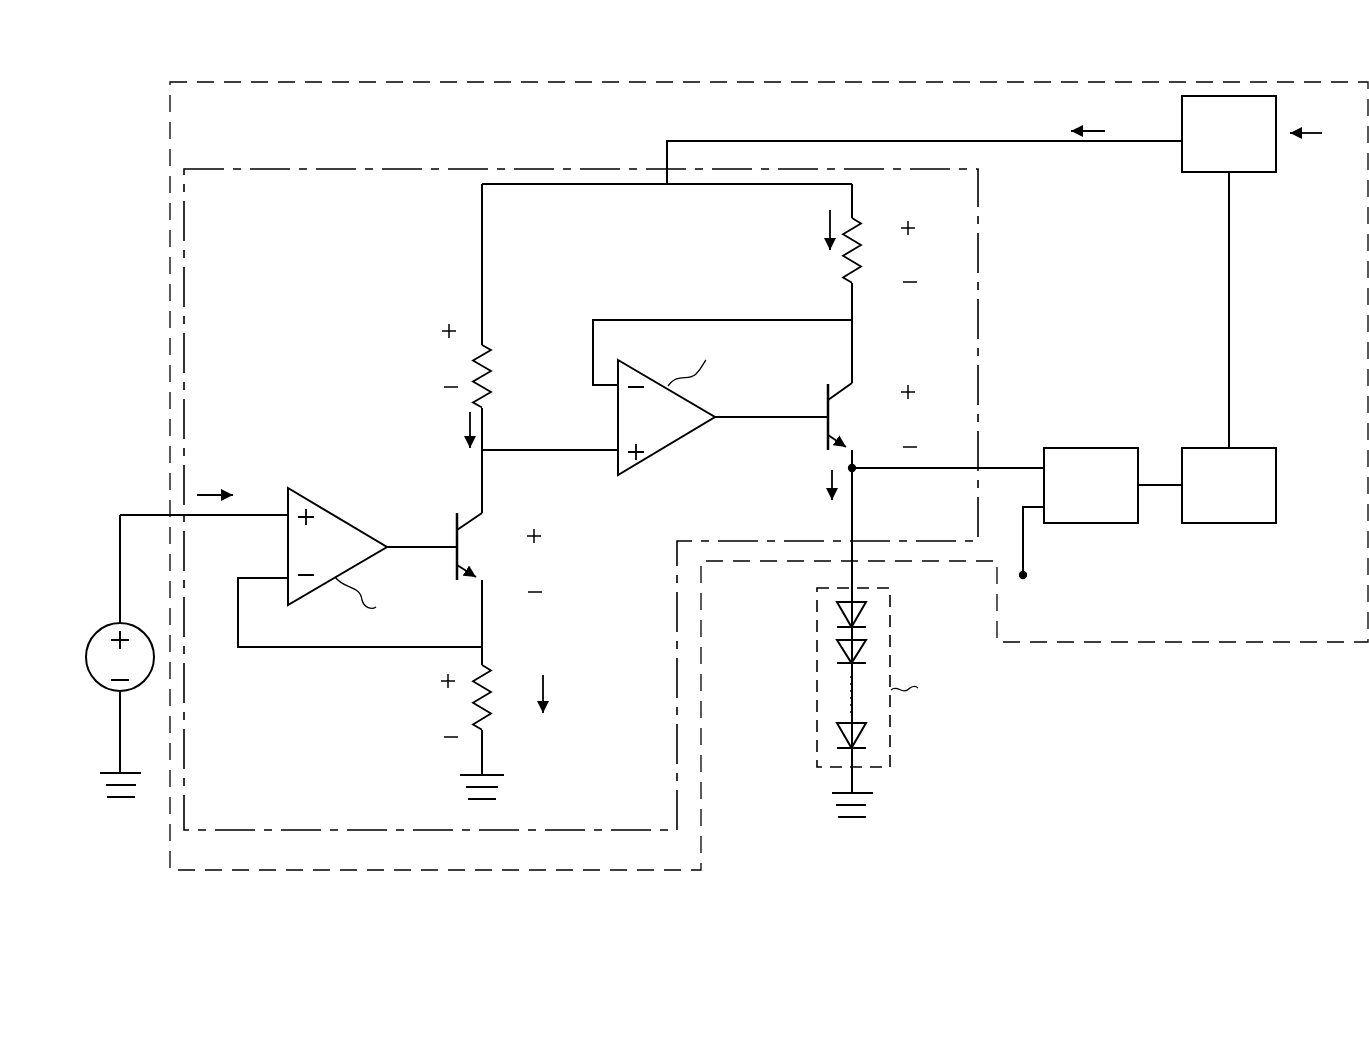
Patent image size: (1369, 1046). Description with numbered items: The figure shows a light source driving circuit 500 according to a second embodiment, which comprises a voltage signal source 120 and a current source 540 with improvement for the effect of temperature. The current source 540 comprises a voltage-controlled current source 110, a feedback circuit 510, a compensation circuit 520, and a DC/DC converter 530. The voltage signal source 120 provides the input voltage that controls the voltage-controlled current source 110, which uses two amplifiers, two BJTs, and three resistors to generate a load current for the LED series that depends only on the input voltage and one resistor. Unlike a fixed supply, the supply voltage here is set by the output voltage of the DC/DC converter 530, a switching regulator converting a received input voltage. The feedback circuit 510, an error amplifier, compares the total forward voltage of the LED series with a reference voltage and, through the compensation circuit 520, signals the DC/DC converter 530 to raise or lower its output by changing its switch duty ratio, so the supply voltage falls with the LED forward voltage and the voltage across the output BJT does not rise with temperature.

The light source driving circuit 500 is at (155, 92).
The current source 540 is at (768, 80).
The voltage-controlled current source 110 is at (592, 168).
The voltage signal source 120 is at (96, 613).
The feedback circuit 510 is at (1067, 501).
The compensation circuit 520 is at (1205, 501).
The DC/DC converter 530 is at (1205, 149).